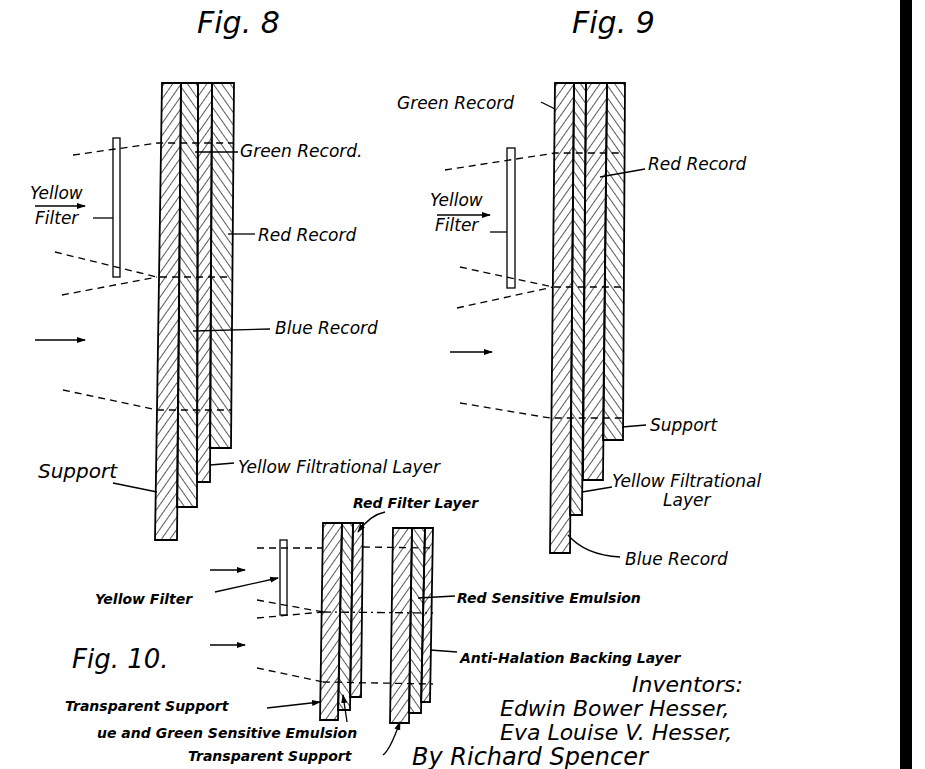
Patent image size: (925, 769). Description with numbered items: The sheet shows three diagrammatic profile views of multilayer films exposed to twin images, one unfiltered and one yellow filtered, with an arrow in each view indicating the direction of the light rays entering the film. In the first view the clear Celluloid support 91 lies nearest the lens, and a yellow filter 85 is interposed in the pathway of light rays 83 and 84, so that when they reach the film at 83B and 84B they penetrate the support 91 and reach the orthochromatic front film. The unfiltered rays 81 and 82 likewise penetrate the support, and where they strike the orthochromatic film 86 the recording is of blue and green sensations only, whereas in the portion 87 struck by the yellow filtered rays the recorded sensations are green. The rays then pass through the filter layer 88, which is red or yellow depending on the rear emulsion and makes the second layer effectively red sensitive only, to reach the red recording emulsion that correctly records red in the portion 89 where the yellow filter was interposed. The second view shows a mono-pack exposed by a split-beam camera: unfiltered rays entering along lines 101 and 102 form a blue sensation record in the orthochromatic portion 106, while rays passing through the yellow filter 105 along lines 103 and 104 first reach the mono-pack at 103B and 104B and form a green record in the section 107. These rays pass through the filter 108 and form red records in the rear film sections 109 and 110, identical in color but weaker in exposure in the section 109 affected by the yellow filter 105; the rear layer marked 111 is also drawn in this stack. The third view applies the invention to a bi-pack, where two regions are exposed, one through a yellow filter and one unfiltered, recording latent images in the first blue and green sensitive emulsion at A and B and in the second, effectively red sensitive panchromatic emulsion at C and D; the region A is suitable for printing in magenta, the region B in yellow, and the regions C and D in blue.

In FIG. 8, the unfiltered light ray 81 is at (102, 285).
In FIG. 8, the unfiltered light ray 82 is at (140, 390).
In FIG. 8, the yellow filtered light ray 83 is at (144, 147).
In FIG. 8, the film entry point of filtered ray 83B is at (144, 129).
In FIG. 8, the yellow filtered light ray 84 is at (140, 255).
In FIG. 8, the film entry point of filtered ray 84B is at (136, 259).
In FIG. 8, the yellow filter 85 is at (104, 196).
In FIG. 8, the orthochromatic film 86 is at (195, 353).
In FIG. 8, the green recording portion of orthochromatic film 87 is at (197, 180).
In FIG. 8, the filter layer 88 is at (205, 475).
In FIG. 8, the red recording portion 89 is at (228, 259).
In FIG. 8, the Celluloid support 91 is at (160, 522).
In FIG. 9, the unfiltered light ray 101 is at (499, 302).
In FIG. 9, the unfiltered light ray 102 is at (533, 401).
In FIG. 9, the yellow filtered light ray 103 is at (533, 162).
In FIG. 9, the mono-pack entry point of filtered ray 103B is at (532, 131).
In FIG. 9, the yellow filtered light ray 104 is at (534, 268).
In FIG. 9, the mono-pack entry point of filtered ray 104B is at (533, 265).
In FIG. 9, the yellow filter 105 is at (507, 147).
In FIG. 9, the blue recording portion of orthochromatic film 106 is at (557, 391).
In FIG. 9, the green recording portion of orthochromatic film 107 is at (557, 193).
In FIG. 9, the filter 108 is at (580, 512).
In FIG. 9, the red record section of rear film 109 is at (600, 210).
In FIG. 9, the red record section of rear film 110 is at (593, 305).
In FIG. 9, the record layer 111 is at (620, 333).
In FIG. 10, the first emulsion latent image region A is at (352, 573).
In FIG. 10, the first emulsion latent image region B is at (352, 652).
In FIG. 10, the second emulsion latent image region C is at (425, 571).
In FIG. 10, the second emulsion latent image region D is at (428, 636).